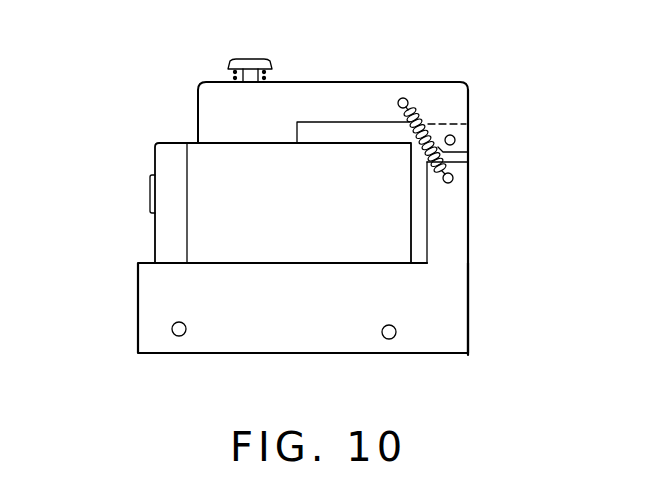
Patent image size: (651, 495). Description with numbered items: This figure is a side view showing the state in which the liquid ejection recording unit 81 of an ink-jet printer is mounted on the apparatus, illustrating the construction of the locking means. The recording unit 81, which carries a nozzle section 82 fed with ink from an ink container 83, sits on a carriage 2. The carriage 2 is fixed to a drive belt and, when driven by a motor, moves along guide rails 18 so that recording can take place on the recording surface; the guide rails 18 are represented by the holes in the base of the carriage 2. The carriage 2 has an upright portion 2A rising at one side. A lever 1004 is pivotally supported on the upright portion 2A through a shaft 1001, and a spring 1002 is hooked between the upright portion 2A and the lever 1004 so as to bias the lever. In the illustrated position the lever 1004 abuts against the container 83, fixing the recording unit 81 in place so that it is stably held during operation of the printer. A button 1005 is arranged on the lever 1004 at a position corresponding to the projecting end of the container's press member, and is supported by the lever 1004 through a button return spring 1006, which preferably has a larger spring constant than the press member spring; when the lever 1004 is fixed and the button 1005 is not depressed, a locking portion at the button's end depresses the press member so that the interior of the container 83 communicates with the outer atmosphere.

The carriage 2 is at (452, 306).
The upright portion 2A is at (462, 212).
The guide rails 18 is at (179, 336).
The liquid ejection recording unit 81 is at (148, 151).
The nozzle section 82 is at (148, 195).
The ink container 83 is at (203, 163).
The shaft 1001 is at (455, 138).
The spring 1002 is at (413, 110).
The lever 1004 is at (363, 92).
The button 1005 is at (245, 58).
The button return spring 1006 is at (268, 72).